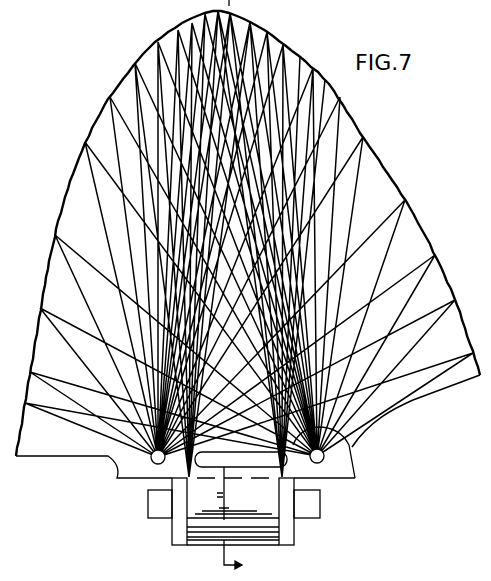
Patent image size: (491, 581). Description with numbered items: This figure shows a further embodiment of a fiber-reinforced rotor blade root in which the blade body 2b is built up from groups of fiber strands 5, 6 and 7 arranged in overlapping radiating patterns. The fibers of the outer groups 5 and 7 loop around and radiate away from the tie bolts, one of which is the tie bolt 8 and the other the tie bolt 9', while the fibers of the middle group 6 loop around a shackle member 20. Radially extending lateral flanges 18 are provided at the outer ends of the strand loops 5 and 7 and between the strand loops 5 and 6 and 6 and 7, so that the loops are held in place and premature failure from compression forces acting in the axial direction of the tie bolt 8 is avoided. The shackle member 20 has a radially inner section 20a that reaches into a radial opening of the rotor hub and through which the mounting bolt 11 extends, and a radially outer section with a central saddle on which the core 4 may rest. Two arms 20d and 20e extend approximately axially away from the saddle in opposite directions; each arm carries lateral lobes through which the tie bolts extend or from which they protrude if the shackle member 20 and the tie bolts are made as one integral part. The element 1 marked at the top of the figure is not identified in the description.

The optical axis 1 is at (231, 3).
The blade body 2b is at (352, 140).
The core 4 is at (243, 251).
The group of fiber strands 5 is at (122, 430).
The group of fiber strands 6 is at (198, 540).
The group of fiber strands 7 is at (366, 442).
The tie bolt 8 is at (153, 467).
The tie bolt 9' is at (325, 465).
The mounting bolt 11 is at (307, 505).
The radially extending lateral flanges 18 is at (283, 540).
The shackle member 20 is at (288, 525).
The radially inner section 20a is at (168, 528).
The arm 20d is at (132, 470).
The arm 20e is at (357, 467).